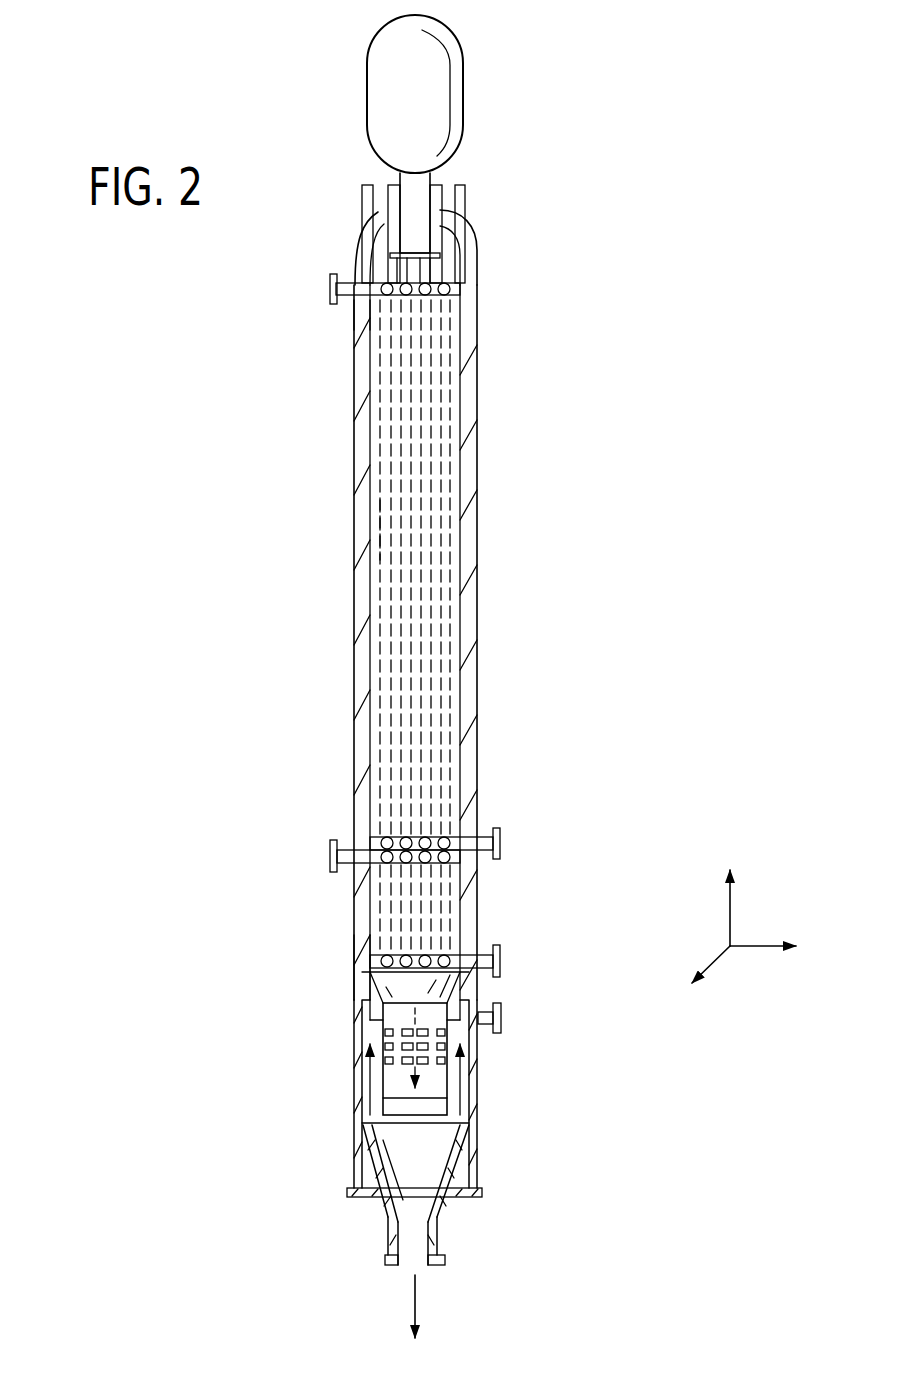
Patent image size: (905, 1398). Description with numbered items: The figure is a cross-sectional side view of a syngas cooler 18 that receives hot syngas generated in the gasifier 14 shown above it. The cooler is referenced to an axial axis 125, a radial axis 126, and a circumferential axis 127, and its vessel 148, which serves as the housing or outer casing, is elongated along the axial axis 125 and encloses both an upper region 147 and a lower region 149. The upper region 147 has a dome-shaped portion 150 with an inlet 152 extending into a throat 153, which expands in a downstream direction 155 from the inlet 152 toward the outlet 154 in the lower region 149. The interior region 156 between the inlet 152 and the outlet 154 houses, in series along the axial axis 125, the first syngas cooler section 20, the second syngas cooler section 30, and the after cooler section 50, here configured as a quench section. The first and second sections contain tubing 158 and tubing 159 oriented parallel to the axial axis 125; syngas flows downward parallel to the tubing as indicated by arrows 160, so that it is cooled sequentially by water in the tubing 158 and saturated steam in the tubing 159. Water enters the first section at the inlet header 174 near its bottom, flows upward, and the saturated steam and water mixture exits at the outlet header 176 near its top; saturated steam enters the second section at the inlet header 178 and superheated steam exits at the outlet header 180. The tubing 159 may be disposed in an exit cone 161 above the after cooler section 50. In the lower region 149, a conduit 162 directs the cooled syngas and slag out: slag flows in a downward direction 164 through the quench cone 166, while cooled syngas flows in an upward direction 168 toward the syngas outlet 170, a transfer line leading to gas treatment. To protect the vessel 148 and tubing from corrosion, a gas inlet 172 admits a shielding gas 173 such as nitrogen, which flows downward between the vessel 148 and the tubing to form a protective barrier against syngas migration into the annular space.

The gasifier 14 is at (455, 33).
The inlet 152 is at (415, 190).
The gas inlet 172 is at (346, 220).
The dome-shaped portion 150 is at (340, 237).
The throat 153 is at (484, 233).
The downstream direction 155 is at (503, 240).
The shielding gas 173 is at (344, 265).
The first syngas cooler section outlet header 176 is at (345, 300).
The upper region 147 is at (500, 346).
The syngas cooler 18 is at (346, 409).
The vessel 148 is at (468, 402).
The interior region 156 is at (450, 500).
The tubing of first syngas cooler section 158 is at (392, 515).
The first syngas cooler section 20 is at (478, 606).
The arrows indicating syngas flow direction 160 is at (328, 673).
The first syngas cooler section inlet header 174 is at (480, 833).
The second syngas cooler section outlet header 180 is at (340, 866).
The tubing of second syngas cooler section 159 is at (453, 895).
The second syngas cooler section 30 is at (352, 950).
The second syngas cooler section inlet header 178 is at (486, 946).
The syngas outlet 170 is at (488, 1003).
The lower region 149 is at (346, 994).
The exit cone 161 is at (447, 989).
The conduit 162 is at (385, 1036).
The upward direction 168 is at (463, 1088).
The after cooler section 50 is at (356, 1150).
The quench cone 166 is at (446, 1204).
The outlet 154 is at (408, 1247).
The downward direction 164 is at (418, 1302).
The axial axis 125 is at (733, 895).
The radial axis 126 is at (765, 948).
The circumferential axis 127 is at (705, 970).